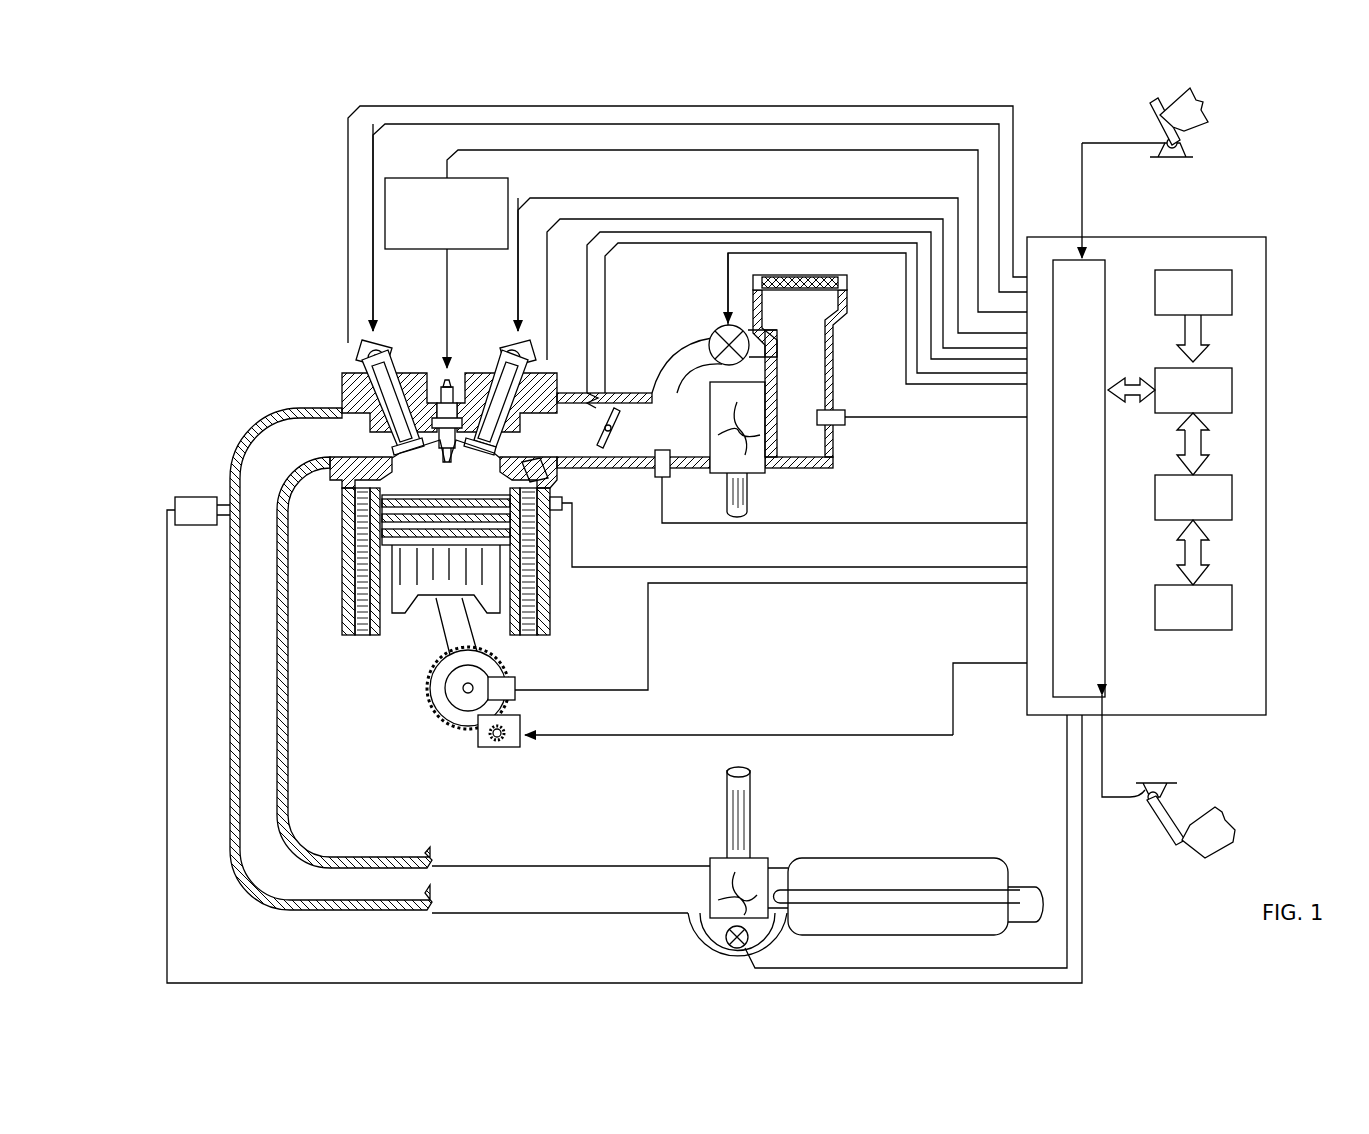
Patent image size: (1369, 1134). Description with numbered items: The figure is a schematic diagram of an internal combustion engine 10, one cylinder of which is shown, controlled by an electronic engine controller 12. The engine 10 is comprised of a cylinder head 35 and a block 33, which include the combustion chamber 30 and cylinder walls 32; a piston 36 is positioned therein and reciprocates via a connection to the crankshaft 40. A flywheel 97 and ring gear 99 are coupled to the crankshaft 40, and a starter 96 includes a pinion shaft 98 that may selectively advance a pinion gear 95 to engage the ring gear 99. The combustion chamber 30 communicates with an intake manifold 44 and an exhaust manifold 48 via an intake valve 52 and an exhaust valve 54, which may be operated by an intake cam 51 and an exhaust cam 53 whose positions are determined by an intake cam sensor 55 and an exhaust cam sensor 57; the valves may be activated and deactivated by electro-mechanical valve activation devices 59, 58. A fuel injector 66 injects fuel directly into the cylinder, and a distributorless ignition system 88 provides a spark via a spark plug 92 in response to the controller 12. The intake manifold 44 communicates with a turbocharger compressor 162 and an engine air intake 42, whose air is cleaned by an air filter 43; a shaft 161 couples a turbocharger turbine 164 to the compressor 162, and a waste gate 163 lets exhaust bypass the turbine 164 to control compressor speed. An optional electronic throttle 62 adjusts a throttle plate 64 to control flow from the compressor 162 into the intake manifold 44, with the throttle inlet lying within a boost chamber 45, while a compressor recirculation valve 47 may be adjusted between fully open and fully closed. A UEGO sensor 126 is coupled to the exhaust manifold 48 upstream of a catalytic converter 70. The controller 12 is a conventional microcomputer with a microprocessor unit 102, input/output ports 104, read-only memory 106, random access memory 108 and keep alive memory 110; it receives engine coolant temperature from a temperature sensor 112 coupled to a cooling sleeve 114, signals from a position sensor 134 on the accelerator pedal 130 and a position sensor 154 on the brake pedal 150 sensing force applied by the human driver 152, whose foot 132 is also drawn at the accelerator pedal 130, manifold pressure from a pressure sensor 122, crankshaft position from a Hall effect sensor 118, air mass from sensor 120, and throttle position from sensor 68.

The internal combustion engine 10 is at (272, 318).
The electronic engine controller 12 is at (1266, 240).
The combustion chamber 30 is at (432, 480).
The cylinder walls 32 is at (378, 628).
The block 33 is at (340, 525).
The cylinder head 35 is at (340, 370).
The piston 36 is at (440, 600).
The crankshaft 40 is at (445, 722).
The engine air intake 42 is at (668, 300).
The air filter 43 is at (810, 290).
The intake manifold 44 is at (580, 444).
The boost chamber 45 is at (684, 444).
The compressor recirculation valve 47 is at (720, 330).
The exhaust manifold 48 is at (318, 449).
The intake cam 51 is at (515, 348).
The intake valve 52 is at (488, 432).
The exhaust cam 53 is at (366, 348).
The exhaust valve 54 is at (372, 440).
The intake cam sensor 55 is at (528, 360).
The exhaust cam sensor 57 is at (360, 356).
The valve activation device 58 is at (392, 360).
The valve activation device 59 is at (505, 368).
The electronic throttle 62 is at (612, 425).
The throttle plate 64 is at (655, 455).
The fuel injector 66 is at (558, 498).
The throttle position sensor 68 is at (592, 400).
The catalytic converter 70 is at (825, 858).
The distributorless ignition system 88 is at (400, 178).
The spark plug 92 is at (453, 368).
The pinion gear 95 is at (503, 745).
The starter 96 is at (515, 745).
The flywheel 97 is at (440, 690).
The pinion shaft 98 is at (490, 740).
The ring gear 99 is at (458, 730).
The microprocessor unit 102 is at (1232, 390).
The input/output ports 104 is at (1106, 262).
The read-only memory 106 is at (1232, 292).
The random access memory 108 is at (1232, 495).
The keep alive memory 110 is at (1232, 605).
The temperature sensor 112 is at (562, 508).
The cooling sleeve 114 is at (552, 590).
The Hall effect sensor 118 is at (515, 678).
The air mass sensor 120 is at (843, 410).
The pressure sensor 122 is at (655, 477).
The Universal Exhaust Gas Oxygen sensor 126 is at (175, 500).
The accelerator pedal 130 is at (1150, 120).
The foot 132 is at (1200, 103).
The position sensor 134 is at (1185, 148).
The brake pedal 150 is at (1178, 842).
The human driver 152 is at (1215, 815).
The position sensor 154 is at (1145, 790).
The shaft 161 is at (727, 495).
The turbocharger compressor 162 is at (752, 470).
The waste gate 163 is at (745, 948).
The turbocharger turbine 164 is at (710, 858).